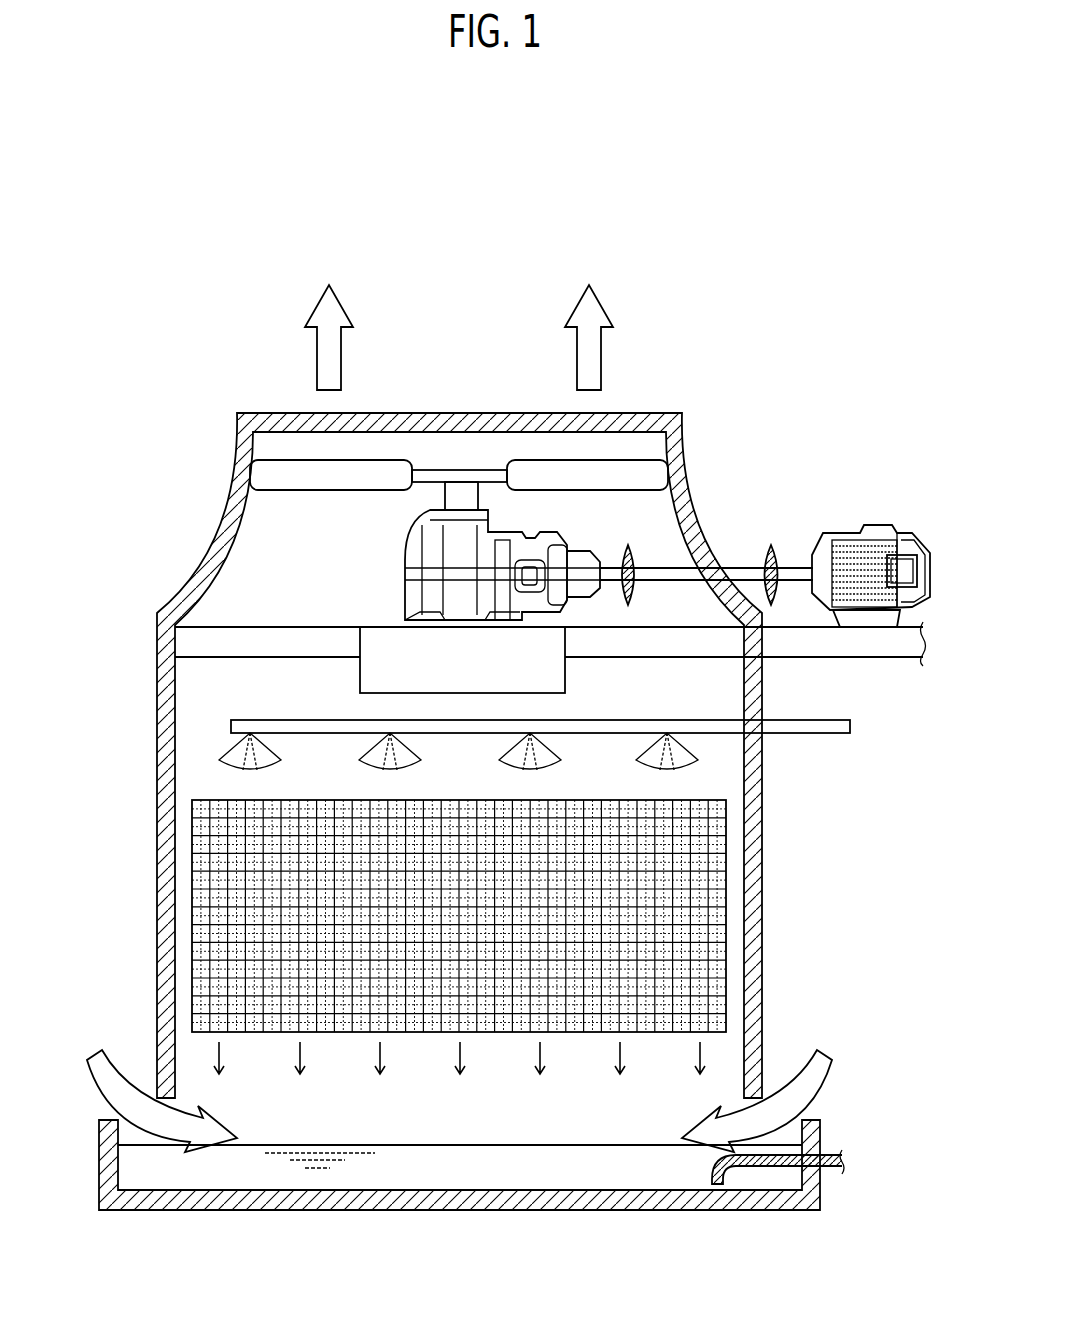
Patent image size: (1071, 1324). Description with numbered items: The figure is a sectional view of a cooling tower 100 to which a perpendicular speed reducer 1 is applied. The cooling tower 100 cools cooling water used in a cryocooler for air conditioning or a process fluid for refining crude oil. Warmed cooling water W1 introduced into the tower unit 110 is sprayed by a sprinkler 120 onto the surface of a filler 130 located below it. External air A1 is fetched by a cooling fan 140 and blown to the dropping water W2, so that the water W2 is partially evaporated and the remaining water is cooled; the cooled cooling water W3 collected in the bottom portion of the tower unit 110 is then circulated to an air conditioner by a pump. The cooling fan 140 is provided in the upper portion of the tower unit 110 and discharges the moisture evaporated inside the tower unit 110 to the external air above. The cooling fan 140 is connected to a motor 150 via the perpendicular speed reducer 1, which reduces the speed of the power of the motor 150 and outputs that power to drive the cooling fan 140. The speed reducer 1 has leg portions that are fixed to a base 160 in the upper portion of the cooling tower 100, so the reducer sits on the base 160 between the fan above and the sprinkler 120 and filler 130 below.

The cooling tower 100 is at (743, 300).
The tower unit 110 is at (157, 730).
The sprinkler 120 is at (712, 722).
The filler 130 is at (727, 860).
The cooling fan 140 is at (318, 460).
The motor 150 is at (880, 525).
The base 160 is at (370, 622).
The perpendicular speed reducer 1 is at (407, 557).
The warmed cooling water W1 is at (377, 773).
The dropping water W2 is at (373, 1052).
The collected cooling water W3 is at (567, 1173).
The external air A1 is at (464, 718).